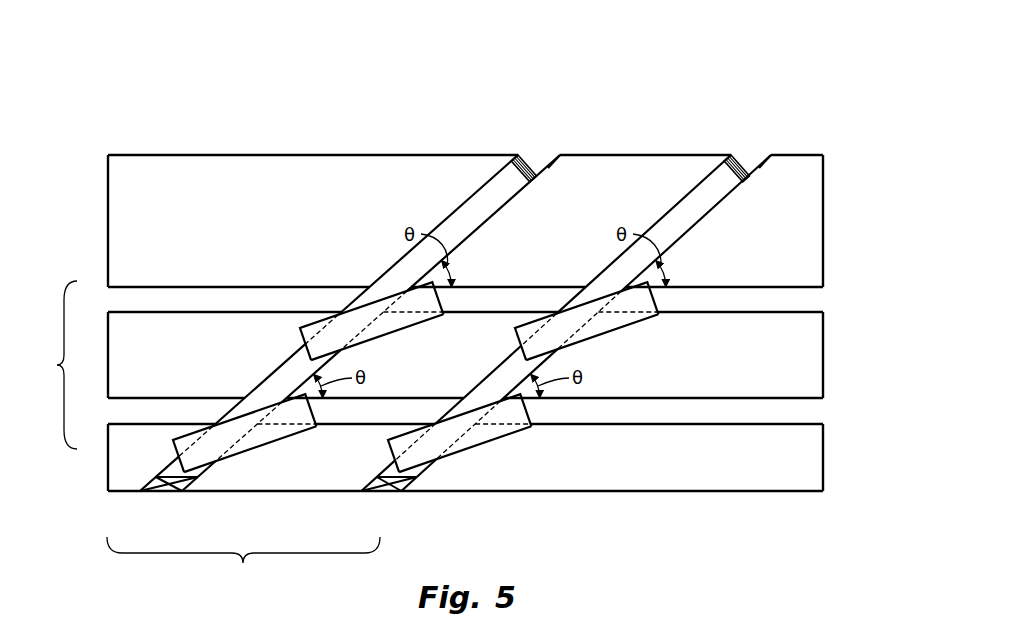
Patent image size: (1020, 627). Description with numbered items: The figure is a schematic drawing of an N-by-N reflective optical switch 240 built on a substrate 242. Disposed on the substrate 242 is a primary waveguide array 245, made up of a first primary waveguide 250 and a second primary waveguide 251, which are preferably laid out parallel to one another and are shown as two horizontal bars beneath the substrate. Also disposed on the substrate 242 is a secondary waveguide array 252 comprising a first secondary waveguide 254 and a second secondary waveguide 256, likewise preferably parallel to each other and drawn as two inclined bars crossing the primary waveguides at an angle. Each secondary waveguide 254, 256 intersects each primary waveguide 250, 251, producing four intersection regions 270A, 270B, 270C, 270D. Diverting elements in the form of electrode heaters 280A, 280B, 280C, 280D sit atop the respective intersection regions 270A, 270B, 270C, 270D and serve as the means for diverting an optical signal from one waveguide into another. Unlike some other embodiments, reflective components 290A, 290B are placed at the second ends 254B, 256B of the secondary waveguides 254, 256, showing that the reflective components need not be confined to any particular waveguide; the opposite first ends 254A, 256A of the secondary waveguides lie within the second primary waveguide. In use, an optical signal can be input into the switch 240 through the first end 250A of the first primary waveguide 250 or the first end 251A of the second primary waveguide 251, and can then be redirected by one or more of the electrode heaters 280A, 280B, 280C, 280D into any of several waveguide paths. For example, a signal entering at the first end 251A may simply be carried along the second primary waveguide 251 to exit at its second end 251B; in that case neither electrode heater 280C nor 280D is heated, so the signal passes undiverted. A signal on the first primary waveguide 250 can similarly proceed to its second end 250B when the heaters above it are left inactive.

The optical switch 240 is at (100, 120).
The substrate 242 is at (246, 221).
The primary waveguide array 245 is at (48, 365).
The first primary waveguide 250 is at (186, 287).
The first end of first primary waveguide 250A is at (133, 298).
The second end of first primary waveguide 250B is at (810, 298).
The second primary waveguide 251 is at (166, 397).
The first end of second primary waveguide 251A is at (133, 422).
The second end of second primary waveguide 251B is at (812, 411).
The secondary waveguide array 252 is at (243, 566).
The first secondary waveguide 254 is at (474, 196).
The first end of first secondary waveguide 254A is at (150, 489).
The second end of first secondary waveguide 254B is at (558, 157).
The second secondary waveguide 256 is at (688, 196).
The first end of second secondary waveguide 256A is at (352, 491).
The second end of second secondary waveguide 256B is at (775, 157).
The intersection region 270A is at (341, 316).
The intersection region 270B is at (556, 314).
The intersection region 270C is at (238, 377).
The intersection region 270D is at (463, 405).
The electrode heater 280A is at (423, 323).
The electrode heater 280B is at (614, 331).
The electrode heater 280C is at (288, 438).
The electrode heater 280D is at (503, 438).
The reflective component 290A is at (540, 157).
The reflective component 290B is at (757, 157).